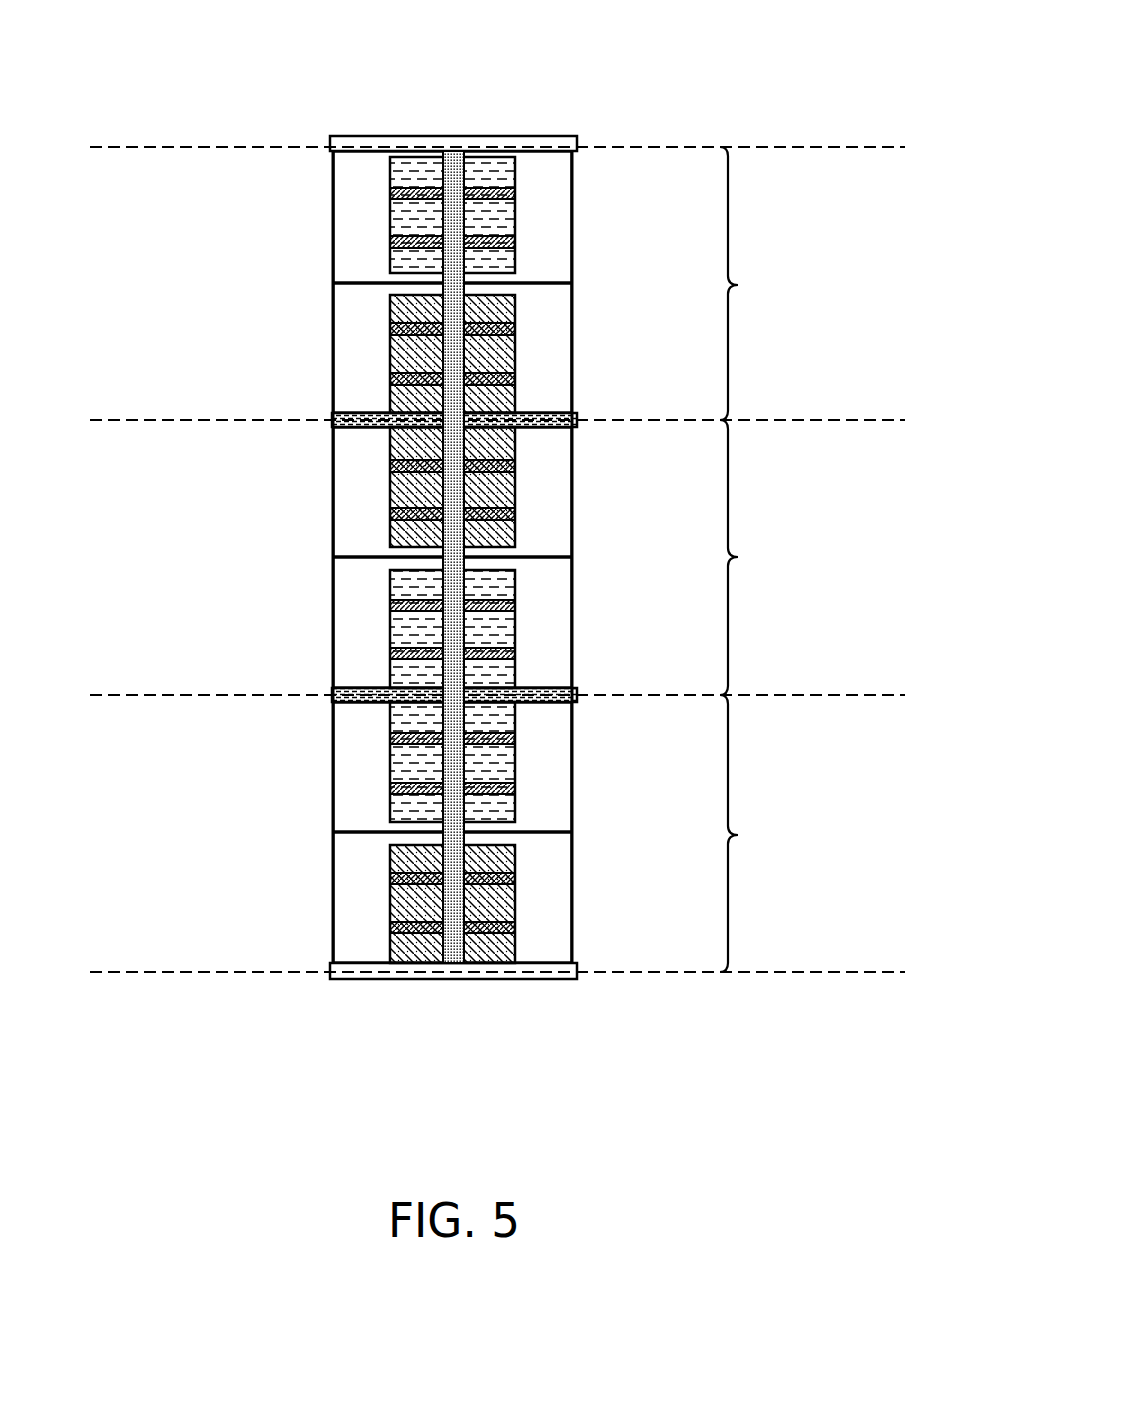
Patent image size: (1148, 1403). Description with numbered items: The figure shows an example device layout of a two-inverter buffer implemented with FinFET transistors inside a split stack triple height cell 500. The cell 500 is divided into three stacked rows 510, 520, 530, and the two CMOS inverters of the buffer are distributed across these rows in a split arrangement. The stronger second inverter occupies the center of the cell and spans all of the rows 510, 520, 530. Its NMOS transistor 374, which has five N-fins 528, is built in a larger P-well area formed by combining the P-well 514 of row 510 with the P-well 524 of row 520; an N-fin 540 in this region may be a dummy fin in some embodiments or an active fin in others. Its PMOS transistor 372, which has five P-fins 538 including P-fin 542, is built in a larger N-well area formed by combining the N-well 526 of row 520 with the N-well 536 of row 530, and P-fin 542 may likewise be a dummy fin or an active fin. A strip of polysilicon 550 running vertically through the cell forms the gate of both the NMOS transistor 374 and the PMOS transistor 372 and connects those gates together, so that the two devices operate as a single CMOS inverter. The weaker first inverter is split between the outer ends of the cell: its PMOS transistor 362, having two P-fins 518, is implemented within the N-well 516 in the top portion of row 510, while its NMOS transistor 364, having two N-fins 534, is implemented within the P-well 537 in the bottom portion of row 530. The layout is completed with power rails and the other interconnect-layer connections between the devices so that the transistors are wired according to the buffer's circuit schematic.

The split stack triple height cell 500 is at (738, 98).
The row 510 is at (758, 283).
The row 520 is at (759, 557).
The row 530 is at (759, 833).
The P-well 514 is at (366, 330).
The N-well 516 is at (366, 255).
The P-fins 518 is at (389, 238).
The PMOS transistor 362 is at (517, 216).
The NMOS transistor 374 is at (517, 350).
The N-fin 540 is at (519, 428).
The P-well 524 is at (366, 530).
The N-well 526 is at (540, 608).
The N-fins 528 is at (390, 513).
The P-fin 542 is at (519, 688).
The polysilicon 550 is at (437, 632).
The N-well 536 is at (366, 806).
The P-well 537 is at (540, 860).
The P-fins 538 is at (390, 787).
The N-fins 534 is at (390, 926).
The PMOS transistor 372 is at (518, 766).
The NMOS transistor 364 is at (518, 903).